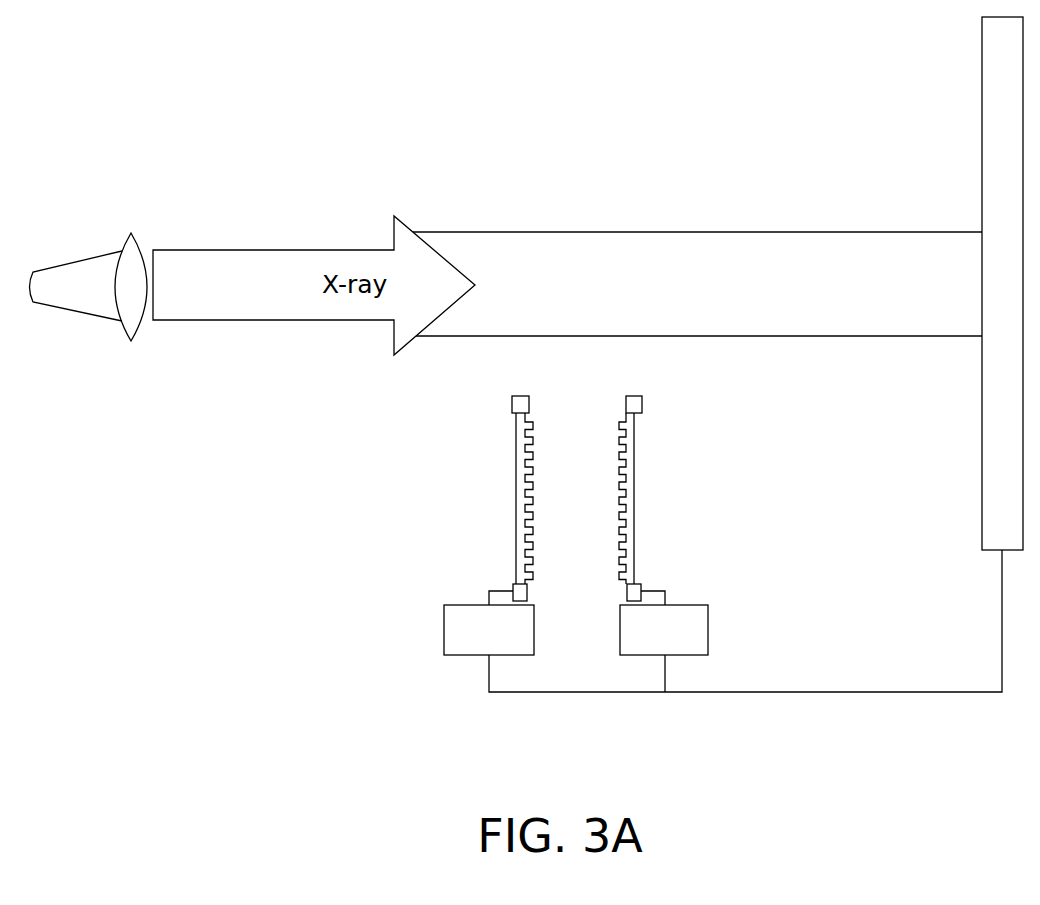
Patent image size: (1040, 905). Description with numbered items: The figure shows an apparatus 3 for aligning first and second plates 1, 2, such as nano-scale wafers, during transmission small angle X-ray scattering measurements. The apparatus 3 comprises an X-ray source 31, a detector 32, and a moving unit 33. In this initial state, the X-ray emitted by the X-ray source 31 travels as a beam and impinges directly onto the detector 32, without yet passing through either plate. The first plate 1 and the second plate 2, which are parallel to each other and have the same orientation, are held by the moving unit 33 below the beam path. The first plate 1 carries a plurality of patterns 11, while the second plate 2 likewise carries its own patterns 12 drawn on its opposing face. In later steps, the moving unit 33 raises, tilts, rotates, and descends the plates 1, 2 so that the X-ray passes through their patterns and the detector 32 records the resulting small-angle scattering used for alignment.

The first plate 1 is at (552, 484).
The second plate 2 is at (602, 484).
The patterns 11 is at (534, 449).
The grating teeth of second grating 12 is at (619, 482).
The apparatus 3 is at (33, 743).
The X-ray source 31 is at (89, 287).
The detector 32 is at (988, 388).
The moving unit 33 is at (665, 699).